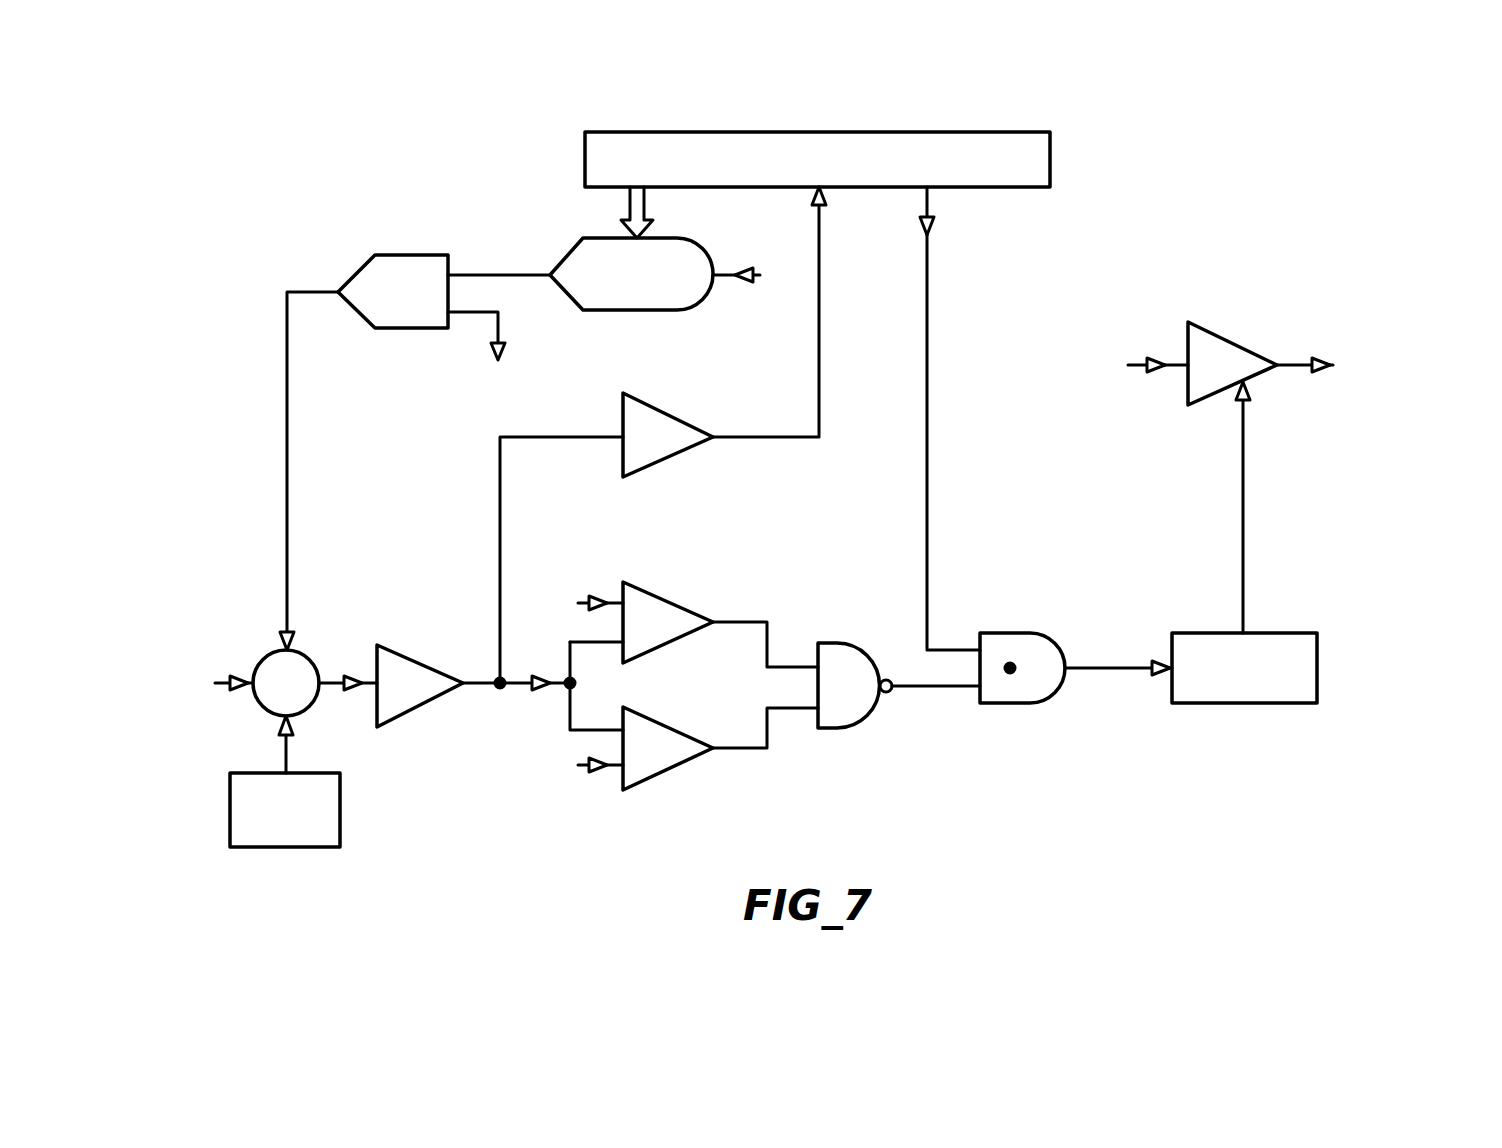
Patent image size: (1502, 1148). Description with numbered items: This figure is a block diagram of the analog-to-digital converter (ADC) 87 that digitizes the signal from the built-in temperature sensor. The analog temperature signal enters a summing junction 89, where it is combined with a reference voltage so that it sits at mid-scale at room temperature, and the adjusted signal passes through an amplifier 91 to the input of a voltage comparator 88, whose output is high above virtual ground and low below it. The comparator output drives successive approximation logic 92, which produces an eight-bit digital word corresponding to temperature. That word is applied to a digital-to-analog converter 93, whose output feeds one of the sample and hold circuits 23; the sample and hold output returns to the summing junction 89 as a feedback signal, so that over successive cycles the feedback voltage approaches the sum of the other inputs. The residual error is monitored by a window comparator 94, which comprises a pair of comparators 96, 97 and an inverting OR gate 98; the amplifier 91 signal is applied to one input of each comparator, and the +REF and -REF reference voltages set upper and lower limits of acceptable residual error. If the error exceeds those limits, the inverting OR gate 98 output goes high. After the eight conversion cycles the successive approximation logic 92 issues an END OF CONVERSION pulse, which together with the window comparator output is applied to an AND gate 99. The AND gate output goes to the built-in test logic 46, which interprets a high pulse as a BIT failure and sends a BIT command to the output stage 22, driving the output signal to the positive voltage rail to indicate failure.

The successive approximation logic 92 is at (1052, 158).
The digital-to-analog converter 93 is at (573, 247).
The sample and hold circuit 23 is at (393, 330).
The summing junction 89 is at (305, 653).
The amplifier 91 is at (415, 713).
The voltage comparator 88 is at (680, 452).
The window comparator 94 is at (750, 683).
The comparator 96 is at (675, 645).
The comparator 97 is at (680, 770).
The inverting OR gate 98 is at (848, 645).
The analog-to-digital converter 87 is at (885, 352).
The AND gate 99 is at (1020, 705).
The built-in test logic 46 is at (1317, 660).
The output stage 22 is at (1197, 405).